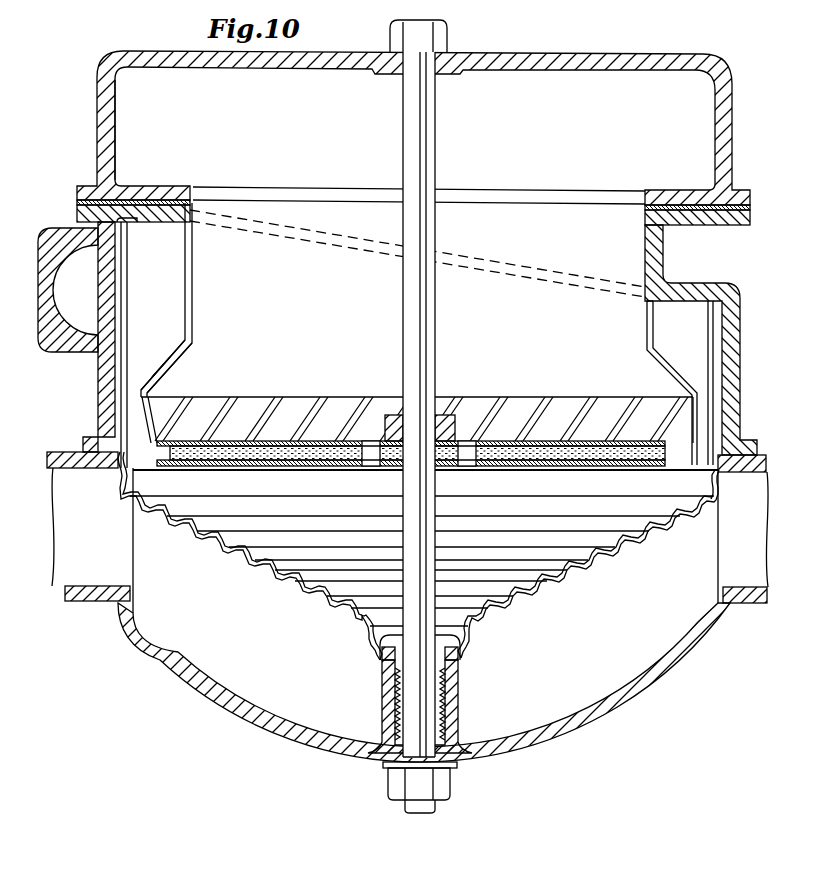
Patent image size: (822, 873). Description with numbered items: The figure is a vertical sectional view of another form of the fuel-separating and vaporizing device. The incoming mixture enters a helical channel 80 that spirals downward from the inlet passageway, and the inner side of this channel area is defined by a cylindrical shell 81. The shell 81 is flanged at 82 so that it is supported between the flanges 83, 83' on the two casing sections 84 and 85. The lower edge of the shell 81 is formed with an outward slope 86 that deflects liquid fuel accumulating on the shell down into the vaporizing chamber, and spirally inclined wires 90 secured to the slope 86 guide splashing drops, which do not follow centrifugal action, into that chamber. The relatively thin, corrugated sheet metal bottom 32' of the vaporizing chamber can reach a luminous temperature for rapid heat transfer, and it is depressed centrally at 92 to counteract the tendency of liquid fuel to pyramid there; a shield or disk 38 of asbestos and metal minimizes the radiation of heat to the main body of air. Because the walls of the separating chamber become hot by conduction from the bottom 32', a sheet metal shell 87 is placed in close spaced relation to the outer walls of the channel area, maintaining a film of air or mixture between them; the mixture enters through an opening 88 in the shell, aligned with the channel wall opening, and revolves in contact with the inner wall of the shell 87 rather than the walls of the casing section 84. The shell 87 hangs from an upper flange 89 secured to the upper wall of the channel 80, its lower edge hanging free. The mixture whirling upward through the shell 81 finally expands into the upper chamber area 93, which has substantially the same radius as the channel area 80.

The casing section 85 is at (98, 99).
The upper chamber area 93 is at (142, 131).
The flange 83' is at (413, 182).
The flange 83 is at (140, 234).
The flange 82 is at (194, 195).
The helical channel 80 is at (419, 334).
The cylindrical shell 81 is at (193, 340).
The outward slope 86 is at (180, 360).
The upper flange 89 is at (697, 294).
The opening 88 is at (127, 312).
The sheet metal shell 87 is at (713, 361).
The casing section 84 is at (104, 384).
The spirally inclined wires 90 is at (300, 402).
The filter element 38 is at (282, 458).
The corrugated bottom 32' is at (418, 556).
The central depression 92 is at (386, 611).